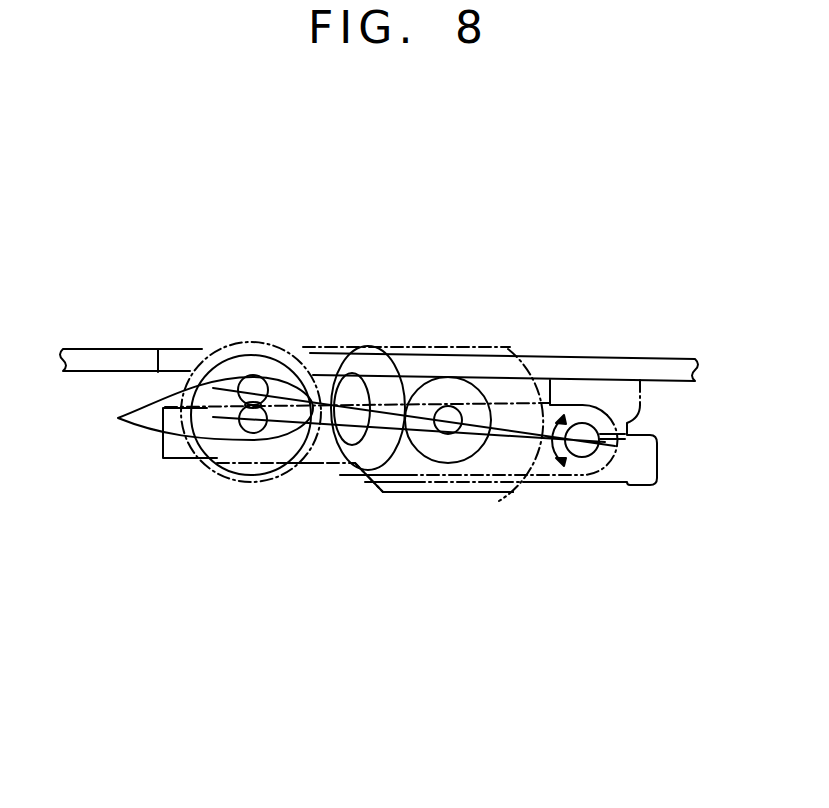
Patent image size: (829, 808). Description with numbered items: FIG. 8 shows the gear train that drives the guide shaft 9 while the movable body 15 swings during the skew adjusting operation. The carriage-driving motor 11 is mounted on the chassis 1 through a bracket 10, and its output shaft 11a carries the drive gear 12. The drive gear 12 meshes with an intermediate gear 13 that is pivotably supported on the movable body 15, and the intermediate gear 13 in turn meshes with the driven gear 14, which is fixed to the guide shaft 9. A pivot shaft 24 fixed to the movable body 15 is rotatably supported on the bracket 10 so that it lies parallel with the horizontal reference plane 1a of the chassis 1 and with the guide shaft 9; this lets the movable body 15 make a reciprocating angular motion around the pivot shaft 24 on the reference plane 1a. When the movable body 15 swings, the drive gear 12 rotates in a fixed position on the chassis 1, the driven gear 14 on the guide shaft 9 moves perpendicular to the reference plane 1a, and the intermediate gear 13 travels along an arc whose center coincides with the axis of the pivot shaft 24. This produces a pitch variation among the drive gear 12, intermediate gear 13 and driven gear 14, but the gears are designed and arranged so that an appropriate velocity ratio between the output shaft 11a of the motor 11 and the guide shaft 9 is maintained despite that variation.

The chassis 1 is at (104, 349).
The horizontal reference plane 1a is at (665, 358).
The guide shaft 9 is at (355, 410).
The bracket 10 is at (628, 487).
The carriage-driving motor 11 is at (447, 492).
The output shaft 11a is at (452, 406).
The drive gear 12 is at (470, 455).
The intermediate gear 13 is at (325, 463).
The driven gear 14 is at (288, 352).
The movable body 15 is at (178, 462).
The pivot shaft 24 is at (625, 432).